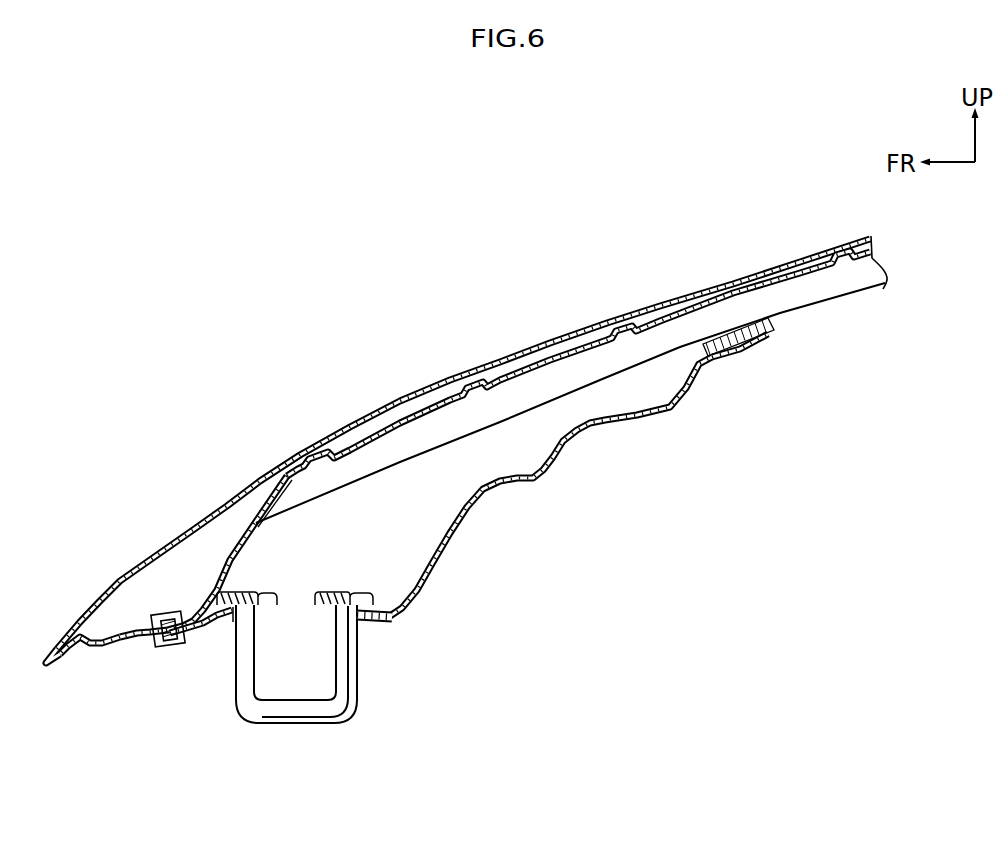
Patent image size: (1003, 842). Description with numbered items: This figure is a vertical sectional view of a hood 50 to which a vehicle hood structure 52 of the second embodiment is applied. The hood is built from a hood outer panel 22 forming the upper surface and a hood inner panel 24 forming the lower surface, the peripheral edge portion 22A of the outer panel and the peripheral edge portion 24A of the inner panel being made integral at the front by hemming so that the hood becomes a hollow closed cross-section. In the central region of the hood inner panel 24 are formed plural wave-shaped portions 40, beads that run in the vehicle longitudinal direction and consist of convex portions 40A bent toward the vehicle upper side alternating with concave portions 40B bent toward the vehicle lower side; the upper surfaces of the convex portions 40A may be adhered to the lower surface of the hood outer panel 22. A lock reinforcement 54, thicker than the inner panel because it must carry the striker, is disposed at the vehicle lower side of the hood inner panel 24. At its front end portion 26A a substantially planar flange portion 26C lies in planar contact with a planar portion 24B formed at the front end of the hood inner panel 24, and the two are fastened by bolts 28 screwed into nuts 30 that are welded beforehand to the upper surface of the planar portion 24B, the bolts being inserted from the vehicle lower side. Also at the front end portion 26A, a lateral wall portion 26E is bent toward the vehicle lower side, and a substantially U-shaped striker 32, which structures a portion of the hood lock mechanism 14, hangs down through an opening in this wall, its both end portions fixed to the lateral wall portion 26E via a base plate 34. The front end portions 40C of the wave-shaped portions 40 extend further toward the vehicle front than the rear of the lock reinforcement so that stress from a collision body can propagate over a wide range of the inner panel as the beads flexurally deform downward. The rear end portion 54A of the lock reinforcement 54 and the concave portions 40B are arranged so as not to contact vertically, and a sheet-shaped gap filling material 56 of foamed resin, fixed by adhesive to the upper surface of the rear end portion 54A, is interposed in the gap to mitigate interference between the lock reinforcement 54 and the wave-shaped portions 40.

The hood lock mechanism 14 is at (290, 681).
The hood outer panel 22 is at (472, 436).
The peripheral edge portion of the hood outer panel 22A is at (61, 662).
The hood inner panel 24 is at (173, 558).
The peripheral edge portion of the hood inner panel 24A is at (73, 645).
The planar portion 24B is at (144, 620).
The front end portion of the lock reinforcement 26A is at (227, 630).
The flange portion 26C is at (193, 640).
The lateral wall portion 26E is at (372, 624).
The bolt 28 is at (173, 633).
The nut 30 is at (176, 616).
The striker 32 is at (330, 710).
The base plate 34 is at (343, 593).
The wave-shaped portion 40 is at (570, 389).
The convex portion 40A is at (750, 278).
The concave portion 40B is at (783, 305).
The front end portion of the wave-shaped portions 40C is at (301, 498).
The hood 50 is at (570, 416).
The vehicle hood structure 52 is at (490, 327).
The lock reinforcement 54 is at (581, 475).
The rear end portion of the lock reinforcement 54A is at (730, 352).
The gap filling material 56 is at (752, 350).